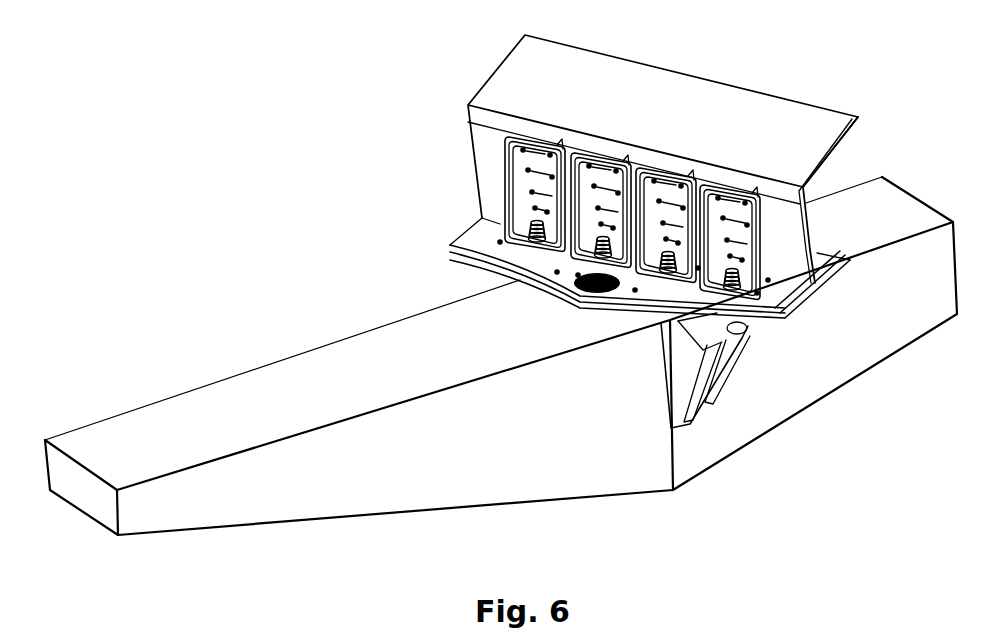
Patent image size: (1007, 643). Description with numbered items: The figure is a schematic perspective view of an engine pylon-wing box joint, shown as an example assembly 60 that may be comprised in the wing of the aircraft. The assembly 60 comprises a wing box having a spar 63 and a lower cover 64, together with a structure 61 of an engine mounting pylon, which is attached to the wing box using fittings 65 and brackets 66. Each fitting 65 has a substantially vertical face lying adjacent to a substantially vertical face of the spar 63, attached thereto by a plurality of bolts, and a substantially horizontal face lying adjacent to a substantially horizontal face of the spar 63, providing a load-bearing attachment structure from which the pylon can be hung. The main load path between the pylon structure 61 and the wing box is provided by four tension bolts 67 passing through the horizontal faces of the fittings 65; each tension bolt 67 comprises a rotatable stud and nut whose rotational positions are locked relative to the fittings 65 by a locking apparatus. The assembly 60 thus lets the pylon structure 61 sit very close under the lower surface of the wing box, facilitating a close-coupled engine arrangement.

The assembly 60 is at (266, 123).
The structure of an engine mounting pylon 61 is at (280, 385).
The spar 63 is at (688, 107).
The lower cover 64 is at (828, 262).
The fittings 65 is at (753, 245).
The brackets 66 is at (725, 355).
The tension bolts 67 is at (590, 237).